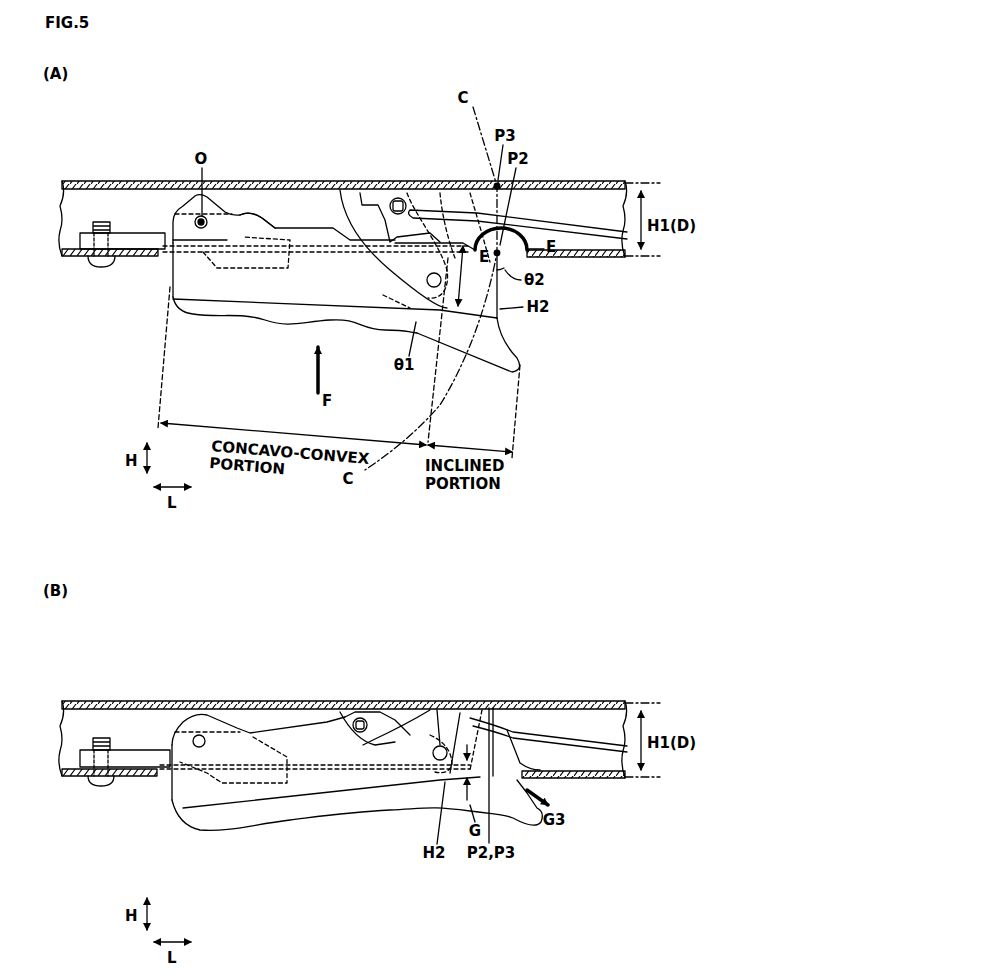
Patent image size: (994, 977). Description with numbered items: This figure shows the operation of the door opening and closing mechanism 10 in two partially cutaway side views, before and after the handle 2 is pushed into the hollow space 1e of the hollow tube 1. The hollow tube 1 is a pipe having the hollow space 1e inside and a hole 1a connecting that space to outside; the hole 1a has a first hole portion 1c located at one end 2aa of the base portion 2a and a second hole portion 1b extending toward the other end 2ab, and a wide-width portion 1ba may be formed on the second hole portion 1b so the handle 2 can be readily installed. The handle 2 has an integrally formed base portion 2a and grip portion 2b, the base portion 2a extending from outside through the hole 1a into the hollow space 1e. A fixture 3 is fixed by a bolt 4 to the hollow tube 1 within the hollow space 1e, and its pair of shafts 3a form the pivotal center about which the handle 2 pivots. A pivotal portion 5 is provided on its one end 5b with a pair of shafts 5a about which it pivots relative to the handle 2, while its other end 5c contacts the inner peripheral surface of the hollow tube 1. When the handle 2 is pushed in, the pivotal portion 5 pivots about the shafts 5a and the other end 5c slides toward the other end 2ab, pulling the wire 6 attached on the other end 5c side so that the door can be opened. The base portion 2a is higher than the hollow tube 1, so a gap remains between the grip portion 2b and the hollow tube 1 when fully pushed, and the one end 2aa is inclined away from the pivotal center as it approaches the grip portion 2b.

The hollow tube 1 is at (263, 188).
The hole 1a is at (426, 154).
The second hole portion 1b is at (439, 192).
The wide-width portion 1ba is at (224, 239).
The first hole portion 1c is at (469, 192).
The hollow space 1e is at (297, 198).
The handle 2 is at (128, 266).
The base portion 2a is at (183, 268).
The one end of base portion 2aa is at (500, 282).
The other end of base portion 2ab is at (166, 251).
The grip portion 2b is at (187, 304).
The fixture 3 is at (122, 238).
The shafts 3a is at (187, 208).
The bolt 4 is at (100, 264).
The pivotal portion 5 is at (417, 220).
The shafts 5a is at (350, 212).
The one end of pivotal portion 5b is at (438, 300).
The other end of pivotal portion 5c is at (380, 190).
The wire 6 is at (593, 224).
The door opening and closing mechanism 10 is at (370, 140).